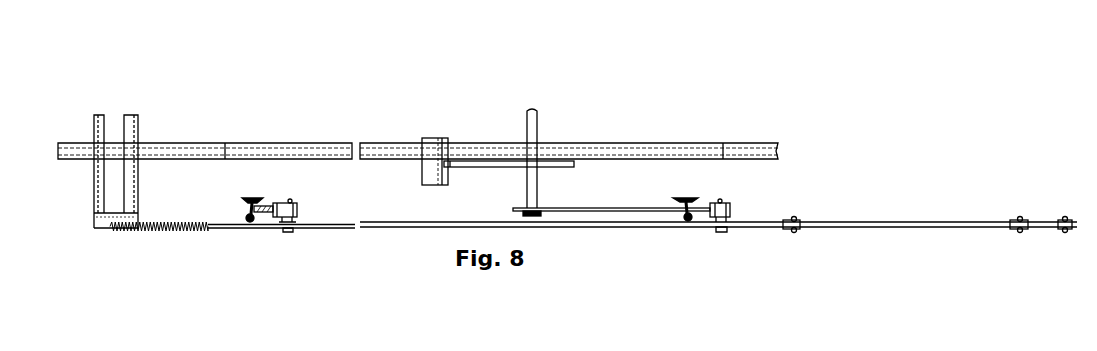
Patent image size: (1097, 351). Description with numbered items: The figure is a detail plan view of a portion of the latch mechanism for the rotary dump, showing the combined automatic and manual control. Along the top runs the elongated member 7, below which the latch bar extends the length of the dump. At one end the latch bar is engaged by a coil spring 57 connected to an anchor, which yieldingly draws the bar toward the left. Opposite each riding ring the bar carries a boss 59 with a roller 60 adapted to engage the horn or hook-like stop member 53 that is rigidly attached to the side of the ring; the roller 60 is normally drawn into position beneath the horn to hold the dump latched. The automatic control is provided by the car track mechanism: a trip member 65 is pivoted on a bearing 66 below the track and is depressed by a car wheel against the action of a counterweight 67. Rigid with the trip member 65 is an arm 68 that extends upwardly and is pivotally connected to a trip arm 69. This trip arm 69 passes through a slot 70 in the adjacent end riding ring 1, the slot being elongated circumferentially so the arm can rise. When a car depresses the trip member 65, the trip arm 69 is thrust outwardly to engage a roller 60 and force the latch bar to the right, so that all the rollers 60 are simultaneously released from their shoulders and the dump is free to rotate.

The end riding ring 1 is at (243, 214).
The bar 7 is at (600, 150).
The stop member 53 is at (263, 207).
The coil spring 57 is at (193, 233).
The boss 59 is at (298, 222).
The roller 60 is at (298, 207).
The trip member 65 is at (572, 168).
The bearing 66 is at (527, 196).
The counterweight 67 is at (442, 186).
The arm 68 is at (515, 211).
The trip arm 69 is at (648, 207).
The slot 70 is at (683, 211).